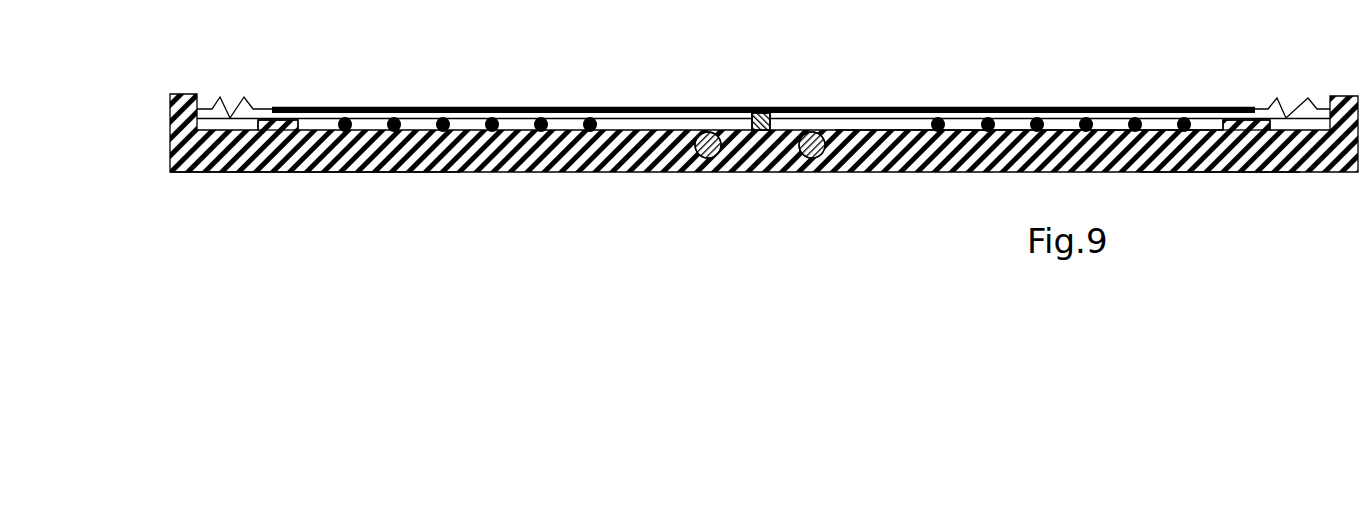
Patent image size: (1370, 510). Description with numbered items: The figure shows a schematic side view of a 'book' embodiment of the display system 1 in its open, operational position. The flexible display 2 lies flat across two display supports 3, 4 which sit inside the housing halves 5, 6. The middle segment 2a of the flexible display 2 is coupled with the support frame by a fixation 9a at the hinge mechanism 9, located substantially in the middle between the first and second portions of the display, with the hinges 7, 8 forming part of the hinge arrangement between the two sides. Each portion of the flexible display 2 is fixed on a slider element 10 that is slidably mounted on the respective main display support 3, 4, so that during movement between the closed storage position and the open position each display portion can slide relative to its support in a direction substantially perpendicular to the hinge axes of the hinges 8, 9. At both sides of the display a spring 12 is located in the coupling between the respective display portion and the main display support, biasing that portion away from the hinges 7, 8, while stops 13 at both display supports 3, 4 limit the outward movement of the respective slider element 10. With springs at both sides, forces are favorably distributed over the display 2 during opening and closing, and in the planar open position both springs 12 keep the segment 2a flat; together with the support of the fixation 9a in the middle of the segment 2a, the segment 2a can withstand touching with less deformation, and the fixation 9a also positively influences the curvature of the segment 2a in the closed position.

The display system 1 is at (257, 241).
The flexible display 2 is at (1066, 107).
The display segment 2a is at (707, 108).
The display support 3 is at (520, 133).
The display support 4 is at (920, 143).
The housing halve 5 is at (385, 184).
The housing halve 6 is at (1217, 180).
The hinge 7 is at (709, 160).
The hinge 8 is at (817, 157).
The hinge mechanism 9 is at (767, 148).
The fixation 9a is at (760, 113).
The slider element 10 is at (497, 117).
The spring 12 is at (230, 113).
The stop 13 is at (284, 128).